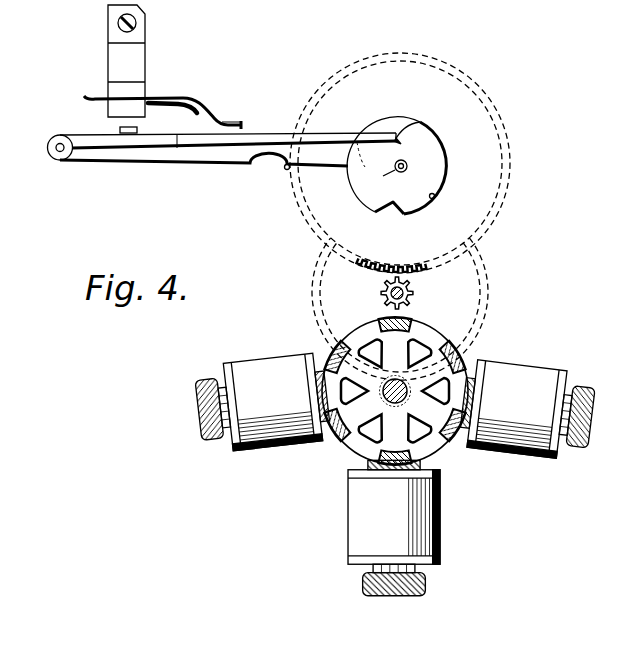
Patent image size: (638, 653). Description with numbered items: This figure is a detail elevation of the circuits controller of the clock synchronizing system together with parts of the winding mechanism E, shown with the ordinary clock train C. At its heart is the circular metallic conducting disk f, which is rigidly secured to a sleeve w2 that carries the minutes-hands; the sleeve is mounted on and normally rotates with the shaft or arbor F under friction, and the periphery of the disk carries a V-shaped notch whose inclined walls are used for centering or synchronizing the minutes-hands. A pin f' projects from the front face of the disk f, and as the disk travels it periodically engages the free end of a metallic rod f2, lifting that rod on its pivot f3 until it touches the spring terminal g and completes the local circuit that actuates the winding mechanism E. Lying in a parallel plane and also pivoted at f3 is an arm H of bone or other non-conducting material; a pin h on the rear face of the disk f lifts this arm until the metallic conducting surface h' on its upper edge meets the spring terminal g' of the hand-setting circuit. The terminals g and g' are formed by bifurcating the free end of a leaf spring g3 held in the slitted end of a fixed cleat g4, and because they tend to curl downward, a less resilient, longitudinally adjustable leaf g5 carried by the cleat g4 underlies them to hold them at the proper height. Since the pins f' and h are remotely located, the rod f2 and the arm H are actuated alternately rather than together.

The spring terminal g is at (162, 105).
The spring terminal g' is at (239, 108).
The leaf spring g3 is at (147, 90).
The fixed cleat g4 is at (108, 50).
The less resilient leaf g5 is at (157, 104).
The circular metallic conducting disk f is at (434, 168).
The pin f' is at (411, 118).
The metallic rod f2 is at (214, 145).
The pivot f3 is at (52, 156).
The pin h is at (443, 207).
The metallic conducting surface h' is at (167, 164).
The arm H is at (237, 166).
The sleeve w2 is at (407, 164).
The shaft or arbor F is at (406, 180).
The clock train C is at (491, 250).
The winding mechanism E is at (308, 477).